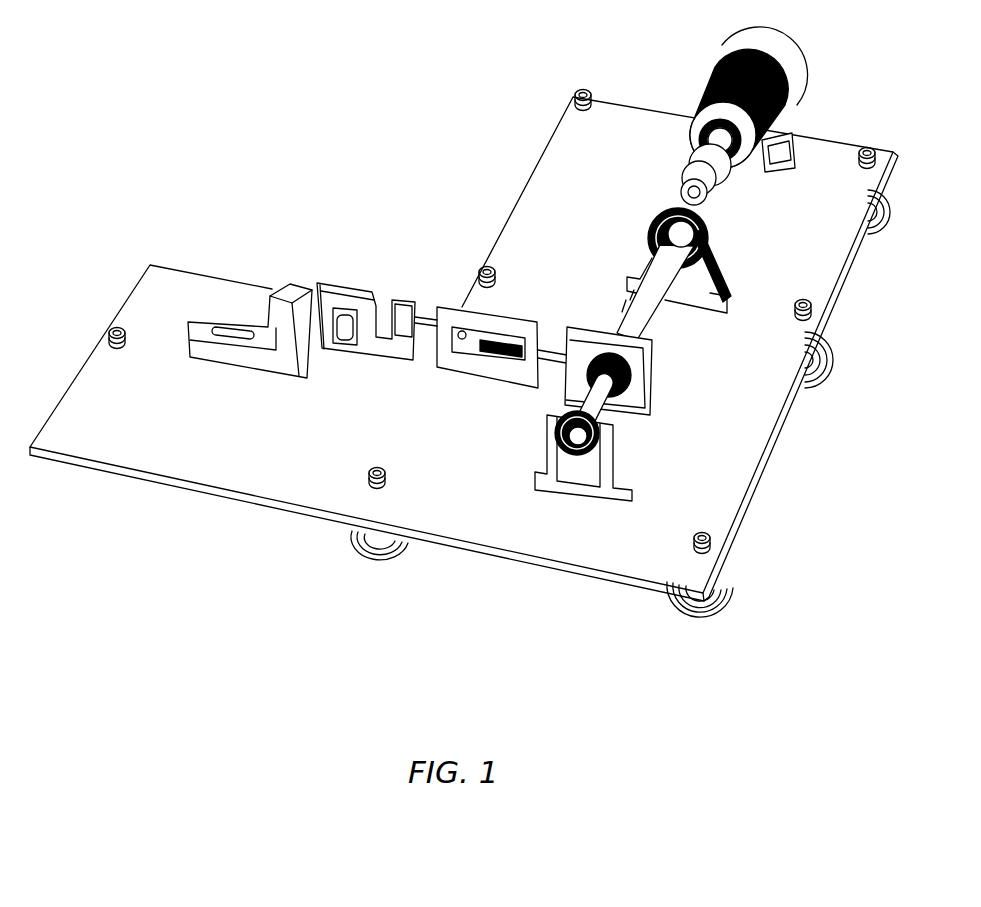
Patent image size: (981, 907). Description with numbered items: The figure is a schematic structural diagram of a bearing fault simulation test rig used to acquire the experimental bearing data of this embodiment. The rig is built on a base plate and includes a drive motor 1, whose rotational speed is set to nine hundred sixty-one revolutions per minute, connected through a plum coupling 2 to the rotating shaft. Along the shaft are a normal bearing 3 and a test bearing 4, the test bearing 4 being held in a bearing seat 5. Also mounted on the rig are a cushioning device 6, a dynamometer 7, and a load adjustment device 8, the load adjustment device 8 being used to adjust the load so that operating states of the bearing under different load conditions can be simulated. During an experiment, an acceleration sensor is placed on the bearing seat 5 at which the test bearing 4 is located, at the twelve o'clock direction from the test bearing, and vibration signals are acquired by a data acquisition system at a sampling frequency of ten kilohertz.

The drive motor 1 is at (760, 92).
The plum coupling 2 is at (703, 170).
The normal bearing 3 is at (727, 307).
The test bearing 4 is at (588, 443).
The bearing seat 5 is at (573, 477).
The cushioning device 6 is at (480, 330).
The dynamometer 7 is at (354, 303).
The load adjustment device 8 is at (236, 343).